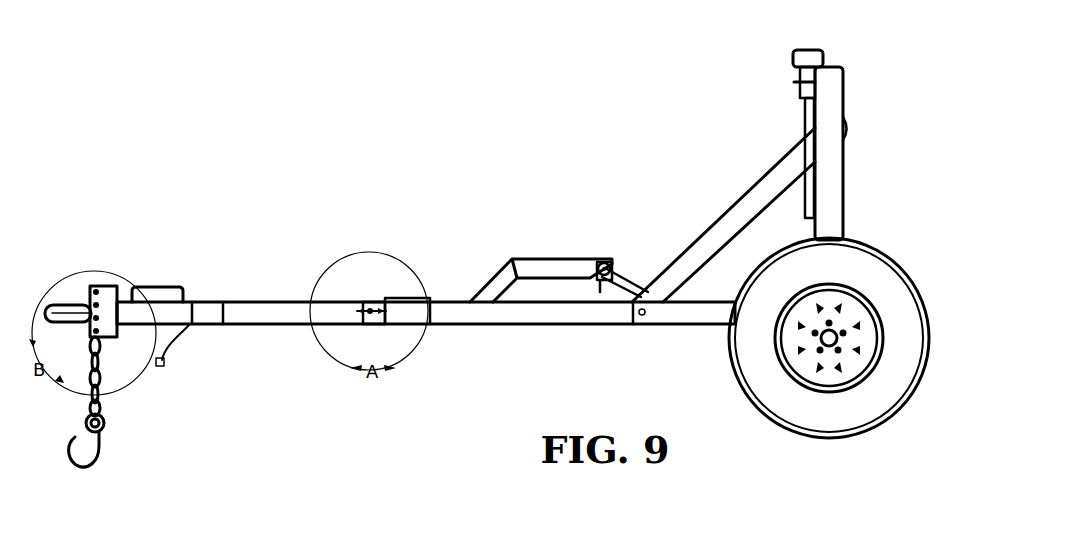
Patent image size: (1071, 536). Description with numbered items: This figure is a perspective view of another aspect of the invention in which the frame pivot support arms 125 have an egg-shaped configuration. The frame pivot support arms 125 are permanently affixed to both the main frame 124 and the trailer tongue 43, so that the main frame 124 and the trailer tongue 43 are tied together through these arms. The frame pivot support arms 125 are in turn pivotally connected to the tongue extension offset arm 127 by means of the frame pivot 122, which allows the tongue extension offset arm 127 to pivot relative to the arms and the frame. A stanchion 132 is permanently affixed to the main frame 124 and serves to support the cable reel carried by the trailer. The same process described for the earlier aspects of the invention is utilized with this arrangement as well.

The trailer tongue 43 is at (483, 319).
The frame pivot 122 is at (600, 282).
The main frame 124 is at (717, 232).
The frame pivot support arms 125 is at (606, 264).
The tongue extension offset arm 127 is at (532, 272).
The stanchion 132 is at (830, 100).